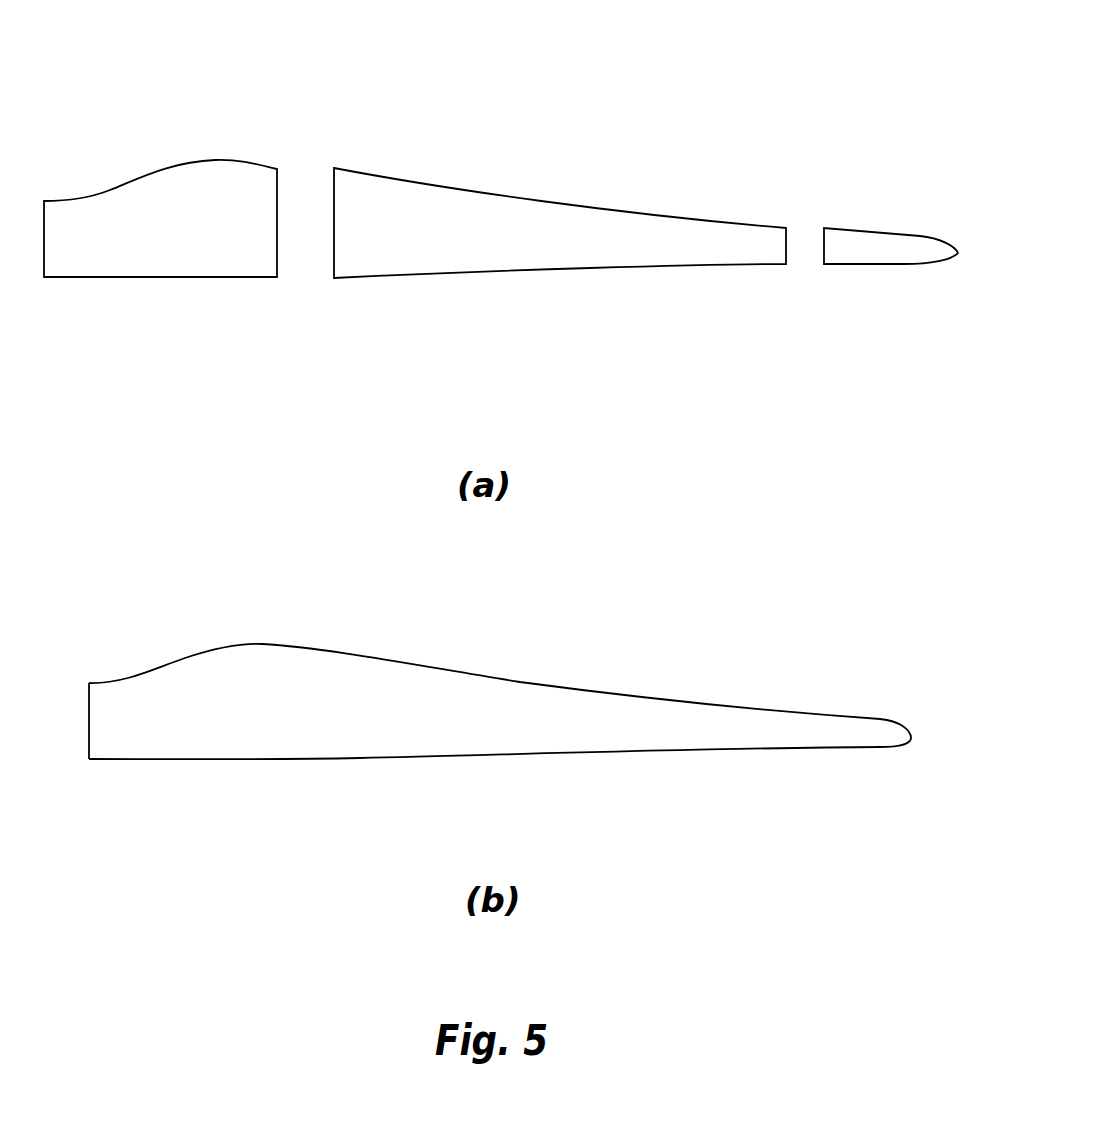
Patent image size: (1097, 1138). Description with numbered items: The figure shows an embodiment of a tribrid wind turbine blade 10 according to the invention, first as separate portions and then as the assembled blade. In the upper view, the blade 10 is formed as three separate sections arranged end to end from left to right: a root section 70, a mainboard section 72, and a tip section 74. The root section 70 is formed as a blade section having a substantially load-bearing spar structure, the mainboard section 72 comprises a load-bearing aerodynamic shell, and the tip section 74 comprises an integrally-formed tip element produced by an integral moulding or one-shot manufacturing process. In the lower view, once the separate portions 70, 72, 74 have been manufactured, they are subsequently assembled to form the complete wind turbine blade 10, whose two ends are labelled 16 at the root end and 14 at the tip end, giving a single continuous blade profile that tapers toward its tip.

The blade 10 is at (682, 125).
The tip end of blade 14 is at (913, 777).
The root end of blade 16 is at (89, 781).
The root section 70 is at (241, 277).
The mainboard section 72 is at (629, 265).
The tip section 74 is at (923, 264).